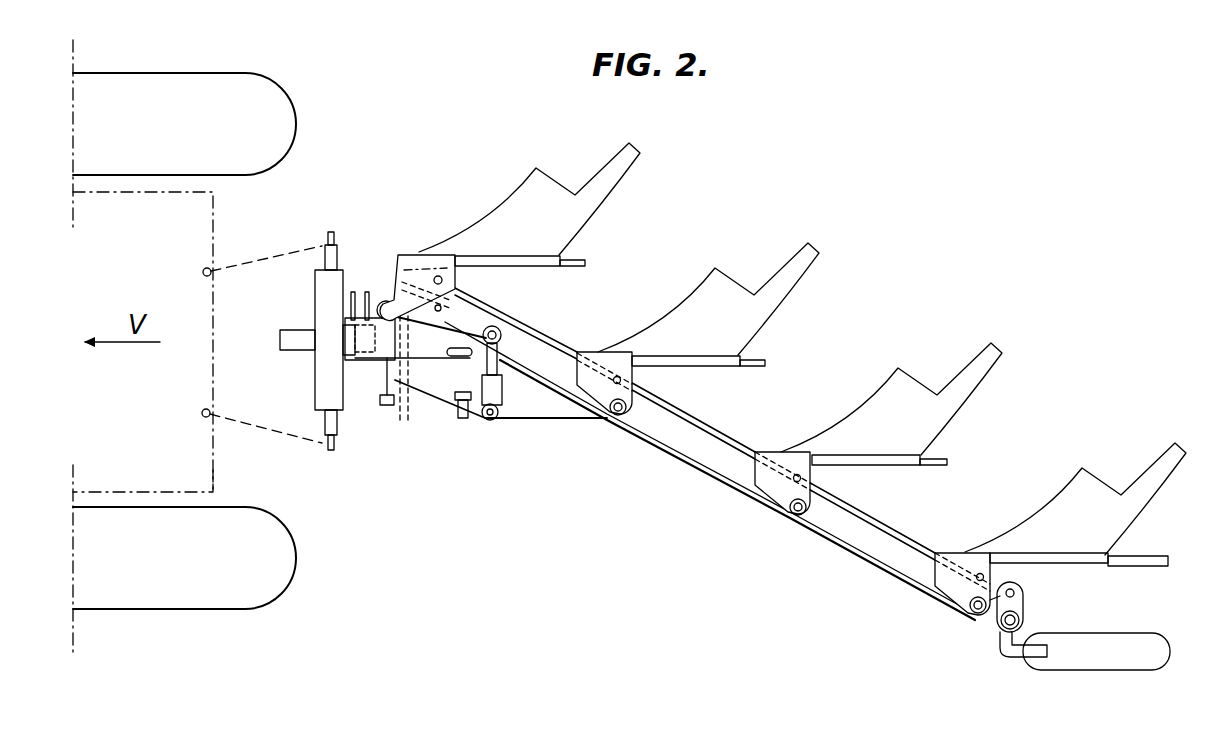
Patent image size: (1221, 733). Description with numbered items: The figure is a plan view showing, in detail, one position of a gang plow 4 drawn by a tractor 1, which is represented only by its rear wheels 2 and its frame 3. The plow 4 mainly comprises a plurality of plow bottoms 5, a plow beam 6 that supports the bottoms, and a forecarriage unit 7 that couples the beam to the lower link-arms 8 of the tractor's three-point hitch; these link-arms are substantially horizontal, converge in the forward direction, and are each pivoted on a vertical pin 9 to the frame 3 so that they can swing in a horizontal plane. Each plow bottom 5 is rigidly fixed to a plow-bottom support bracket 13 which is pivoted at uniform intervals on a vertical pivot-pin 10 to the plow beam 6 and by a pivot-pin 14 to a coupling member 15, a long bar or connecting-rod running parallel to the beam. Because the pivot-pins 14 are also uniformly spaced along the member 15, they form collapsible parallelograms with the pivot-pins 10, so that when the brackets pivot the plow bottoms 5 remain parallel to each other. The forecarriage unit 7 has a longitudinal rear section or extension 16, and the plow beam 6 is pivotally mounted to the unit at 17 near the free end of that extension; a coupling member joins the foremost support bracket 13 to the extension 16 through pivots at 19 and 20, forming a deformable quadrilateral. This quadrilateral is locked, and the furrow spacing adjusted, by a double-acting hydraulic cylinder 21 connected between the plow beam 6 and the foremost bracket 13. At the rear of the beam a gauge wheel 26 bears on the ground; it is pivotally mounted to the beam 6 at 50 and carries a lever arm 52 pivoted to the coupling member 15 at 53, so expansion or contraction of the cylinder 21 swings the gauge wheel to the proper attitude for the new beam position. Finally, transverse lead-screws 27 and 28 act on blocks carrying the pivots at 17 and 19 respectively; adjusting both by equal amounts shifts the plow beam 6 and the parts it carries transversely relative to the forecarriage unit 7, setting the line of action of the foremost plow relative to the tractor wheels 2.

The tractor 1 is at (251, 71).
The rear wheels 2 is at (143, 74).
The frame 3 is at (215, 481).
The gang plow 4 is at (688, 268).
The plow bottoms 5 is at (615, 149).
The plow beam 6 is at (876, 552).
The forecarriage unit 7 is at (321, 261).
The link-arms 8 is at (247, 269).
The vertical pin 9 is at (203, 272).
The vertical pivot-pins 10 is at (443, 307).
The plow-bottom support bracket 13 is at (410, 256).
The pivot-pin 14 is at (441, 277).
The coupling member 15 is at (706, 428).
The rear section or extension 16 is at (430, 378).
The pivot-pin 17 is at (500, 331).
The pivot-pin 19 is at (388, 302).
The pivot-pin 20 is at (340, 368).
The double-acting hydraulic cylinder 21 is at (505, 416).
The gauge wheel 26 is at (1092, 645).
The transverse lead-screw 27 is at (462, 424).
The transverse lead-screw 28 is at (385, 406).
The pivotal mounting 50 is at (995, 633).
The lever arm 52 is at (1022, 610).
The pivot 53 is at (1024, 600).